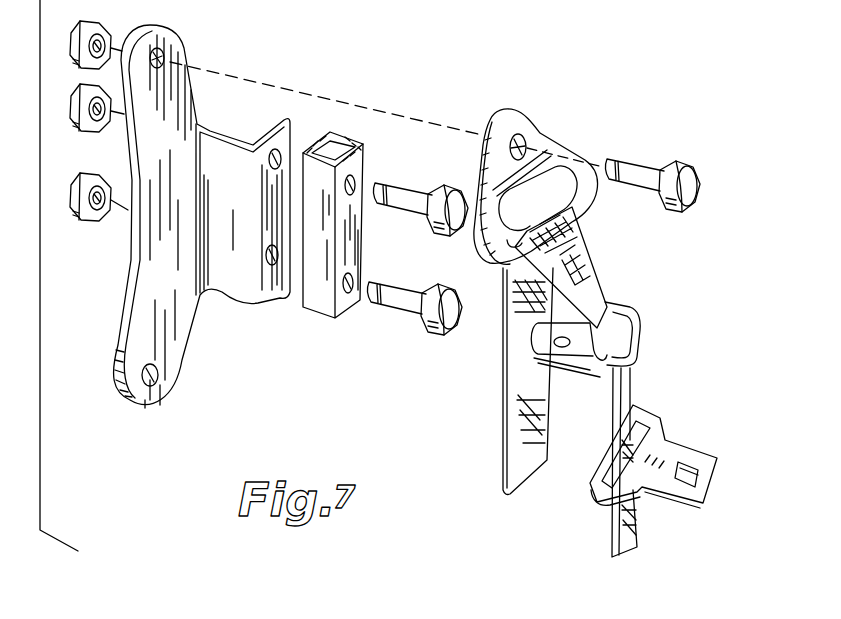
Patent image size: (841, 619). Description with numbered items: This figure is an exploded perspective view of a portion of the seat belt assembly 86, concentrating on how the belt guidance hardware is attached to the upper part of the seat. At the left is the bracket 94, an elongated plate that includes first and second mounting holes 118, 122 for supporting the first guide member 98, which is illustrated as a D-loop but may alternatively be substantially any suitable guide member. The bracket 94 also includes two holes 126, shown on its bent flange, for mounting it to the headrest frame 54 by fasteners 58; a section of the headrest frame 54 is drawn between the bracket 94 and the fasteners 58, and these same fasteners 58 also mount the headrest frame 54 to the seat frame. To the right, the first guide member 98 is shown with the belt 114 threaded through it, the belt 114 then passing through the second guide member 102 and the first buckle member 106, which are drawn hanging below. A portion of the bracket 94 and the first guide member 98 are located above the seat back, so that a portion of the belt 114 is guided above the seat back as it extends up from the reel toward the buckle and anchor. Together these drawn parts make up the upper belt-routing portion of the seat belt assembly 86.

The headrest frame 54 is at (358, 138).
The fasteners 58 is at (412, 199).
The seat belt assembly 86 is at (629, 82).
The bracket 94 is at (119, 337).
The first guide member 98 is at (508, 112).
The second guide member 102 is at (641, 338).
The first buckle member 106 is at (697, 453).
The belt 114 is at (567, 250).
The first mounting hole 118 is at (163, 53).
The second mounting hole 122 is at (158, 374).
The holes 126 is at (270, 163).